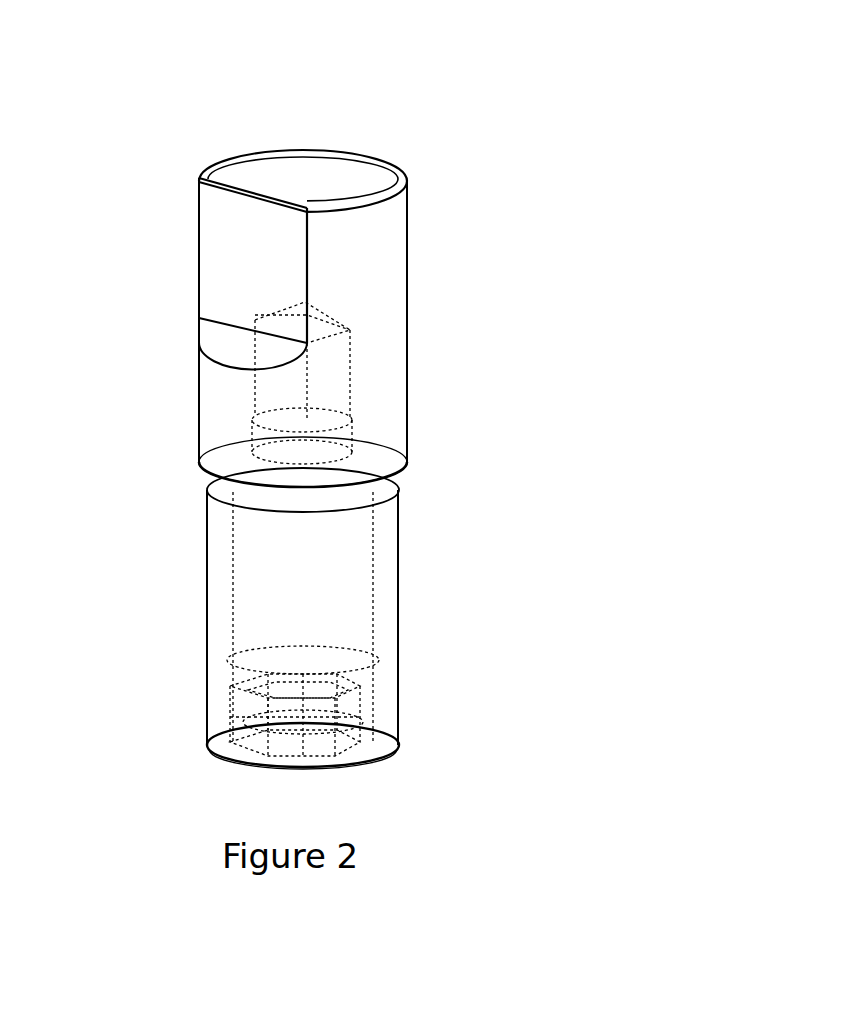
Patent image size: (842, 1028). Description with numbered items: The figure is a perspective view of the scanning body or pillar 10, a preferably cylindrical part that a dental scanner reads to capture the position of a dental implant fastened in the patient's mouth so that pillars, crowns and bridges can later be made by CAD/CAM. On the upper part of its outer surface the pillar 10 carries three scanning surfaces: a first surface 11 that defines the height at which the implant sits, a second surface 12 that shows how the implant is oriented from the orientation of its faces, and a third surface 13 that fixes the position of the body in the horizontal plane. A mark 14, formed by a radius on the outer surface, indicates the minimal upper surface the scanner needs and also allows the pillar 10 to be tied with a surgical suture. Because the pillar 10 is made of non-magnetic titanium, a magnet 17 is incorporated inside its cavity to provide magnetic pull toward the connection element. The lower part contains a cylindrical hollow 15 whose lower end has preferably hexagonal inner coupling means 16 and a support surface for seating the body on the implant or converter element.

The scanning body or pillar 10 is at (206, 67).
The first surface 11 is at (347, 145).
The second surface 12 is at (170, 271).
The third surface 13 is at (361, 318).
The mark 14 is at (383, 481).
The hollow 15 is at (244, 629).
The inner coupling means 16 is at (394, 715).
The magnet 17 is at (198, 383).